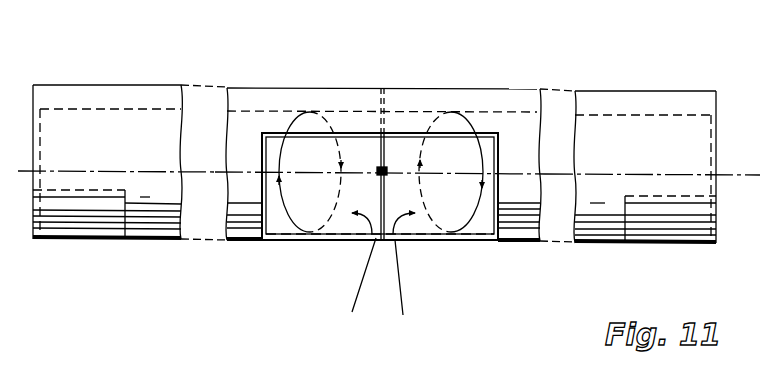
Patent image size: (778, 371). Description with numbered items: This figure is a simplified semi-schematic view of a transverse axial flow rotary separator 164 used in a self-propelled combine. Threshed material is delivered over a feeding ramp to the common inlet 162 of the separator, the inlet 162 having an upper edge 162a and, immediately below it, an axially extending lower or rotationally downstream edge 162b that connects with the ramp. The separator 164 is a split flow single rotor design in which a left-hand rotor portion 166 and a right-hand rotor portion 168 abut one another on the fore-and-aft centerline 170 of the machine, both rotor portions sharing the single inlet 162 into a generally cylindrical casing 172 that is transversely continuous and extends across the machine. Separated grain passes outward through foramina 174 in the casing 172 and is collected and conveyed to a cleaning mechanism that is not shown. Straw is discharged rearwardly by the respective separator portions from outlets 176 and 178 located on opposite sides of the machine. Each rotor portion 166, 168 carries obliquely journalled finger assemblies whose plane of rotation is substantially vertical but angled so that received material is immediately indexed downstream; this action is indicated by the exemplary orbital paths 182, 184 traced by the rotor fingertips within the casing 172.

The inlet 162 is at (418, 200).
The upper edge 162a is at (419, 130).
The lower or rotationally downstream edge 162b is at (411, 240).
The transverse axial flow rotary separator 164 is at (156, 62).
The left-hand rotor portion 166 is at (624, 114).
The right-hand rotor portion 168 is at (90, 108).
The fore-and-aft centerline 170 is at (384, 88).
The casing 172 is at (288, 90).
The foramina 174 is at (138, 238).
The outlet 176 is at (645, 245).
The outlet 178 is at (89, 222).
The orbital path 182 is at (427, 237).
The orbital path 184 is at (336, 222).